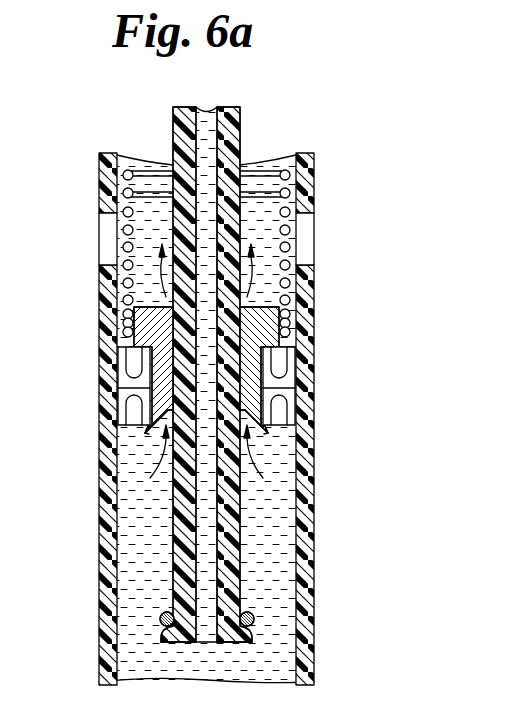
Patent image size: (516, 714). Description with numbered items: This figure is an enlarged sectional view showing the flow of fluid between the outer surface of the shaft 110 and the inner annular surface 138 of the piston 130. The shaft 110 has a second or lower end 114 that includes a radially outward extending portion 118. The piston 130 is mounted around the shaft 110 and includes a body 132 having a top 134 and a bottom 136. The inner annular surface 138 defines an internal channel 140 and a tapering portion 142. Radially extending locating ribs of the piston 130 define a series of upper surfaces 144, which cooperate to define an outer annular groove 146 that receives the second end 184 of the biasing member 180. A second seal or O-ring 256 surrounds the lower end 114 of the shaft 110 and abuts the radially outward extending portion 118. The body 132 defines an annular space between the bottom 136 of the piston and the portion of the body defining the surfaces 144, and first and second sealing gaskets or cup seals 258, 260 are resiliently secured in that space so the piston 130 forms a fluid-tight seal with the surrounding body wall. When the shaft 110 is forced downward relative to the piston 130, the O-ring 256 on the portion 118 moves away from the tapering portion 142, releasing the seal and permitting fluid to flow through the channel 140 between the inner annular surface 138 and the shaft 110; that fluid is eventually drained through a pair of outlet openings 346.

The shaft 110 is at (241, 146).
The second or lower end of the shaft 114 is at (165, 642).
The radially outward extending portion 118 is at (254, 637).
The piston 130 is at (290, 305).
The body of the piston 132 is at (312, 348).
The top of the piston 134 is at (148, 300).
The bottom of the piston 136 is at (147, 432).
The inner annular surface 138 is at (160, 374).
The internal channel 140 is at (165, 433).
The tapering portion 142 is at (243, 413).
The upper surfaces 144 is at (295, 343).
The outer annular groove 146 is at (125, 307).
The biasing member 180 is at (313, 162).
The second end of the biasing member 184 is at (286, 322).
The second seal or O-ring 256 is at (252, 614).
The first sealing gasket or cup seal 258 is at (290, 378).
The second sealing gasket or cup seal 260 is at (290, 407).
The outlet openings 346 is at (108, 255).